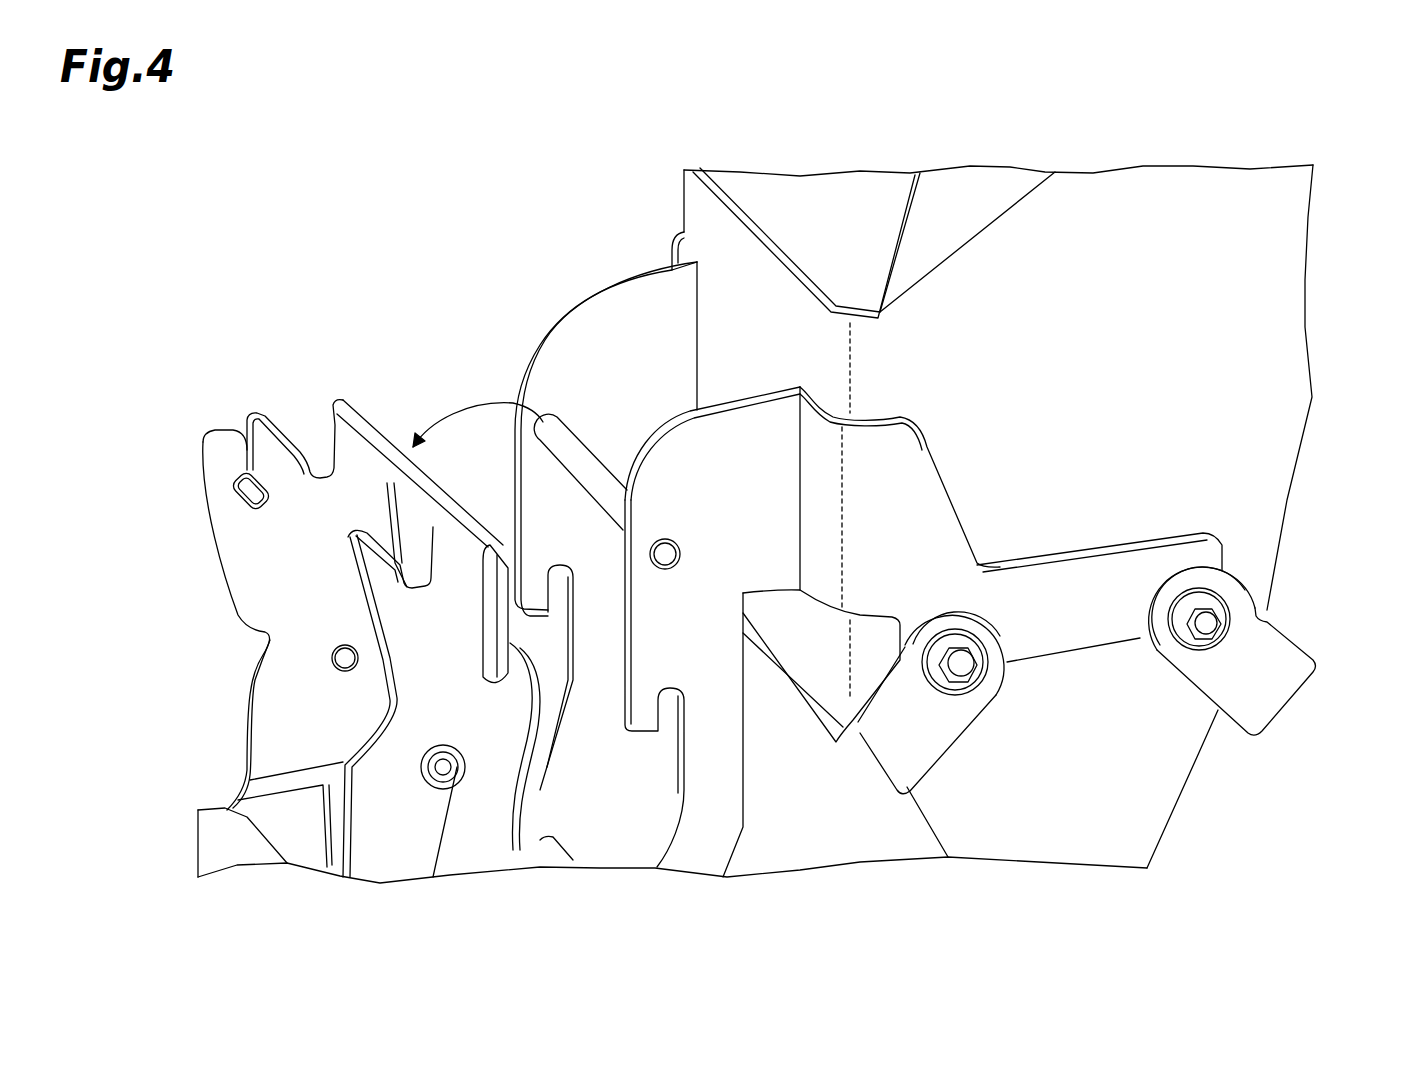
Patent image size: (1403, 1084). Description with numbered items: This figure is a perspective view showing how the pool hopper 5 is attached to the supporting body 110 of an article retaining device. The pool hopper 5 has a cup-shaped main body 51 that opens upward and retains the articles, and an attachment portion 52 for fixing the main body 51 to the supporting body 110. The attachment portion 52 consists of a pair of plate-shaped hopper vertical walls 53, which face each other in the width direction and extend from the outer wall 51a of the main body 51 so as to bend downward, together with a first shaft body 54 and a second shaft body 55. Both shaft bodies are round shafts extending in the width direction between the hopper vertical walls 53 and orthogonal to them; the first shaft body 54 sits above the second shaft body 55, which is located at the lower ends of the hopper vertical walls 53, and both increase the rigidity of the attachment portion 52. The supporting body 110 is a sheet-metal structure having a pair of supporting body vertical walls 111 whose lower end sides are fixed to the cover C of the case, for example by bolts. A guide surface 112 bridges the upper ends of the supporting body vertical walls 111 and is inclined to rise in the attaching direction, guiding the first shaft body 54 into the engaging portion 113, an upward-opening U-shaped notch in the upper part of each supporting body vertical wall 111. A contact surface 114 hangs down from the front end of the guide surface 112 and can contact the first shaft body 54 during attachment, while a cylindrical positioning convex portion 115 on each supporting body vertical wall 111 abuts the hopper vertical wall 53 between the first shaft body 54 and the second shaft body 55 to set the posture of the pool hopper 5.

The pool hopper 5 is at (643, 180).
The main body 51 is at (1277, 327).
The outer wall 51a is at (742, 276).
The attachment portion 52 is at (578, 280).
The hopper vertical wall 53 is at (560, 347).
The first shaft body 54 is at (590, 447).
The second shaft body 55 is at (556, 862).
The supporting body 110 is at (153, 423).
The supporting body vertical wall 111 is at (262, 733).
The guide surface 112 is at (443, 507).
The engaging portion 113 is at (313, 458).
The contact surface 114 is at (527, 660).
The positioning convex portion 115 is at (463, 780).
The cover C is at (240, 850).